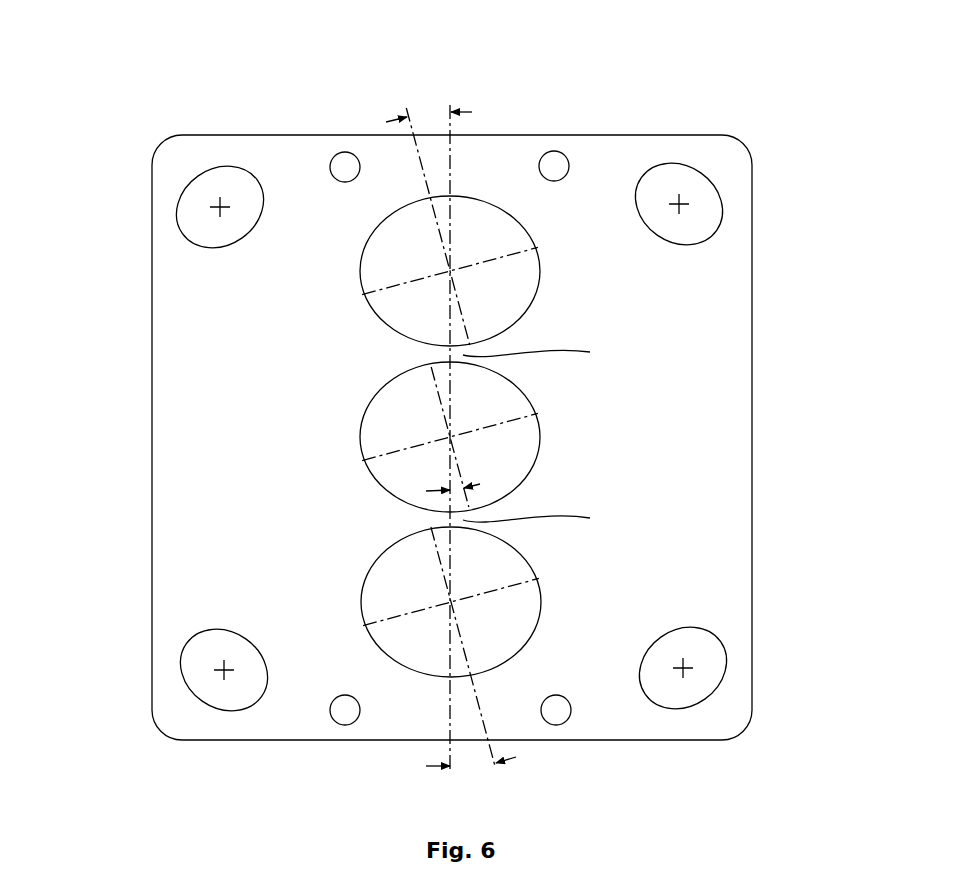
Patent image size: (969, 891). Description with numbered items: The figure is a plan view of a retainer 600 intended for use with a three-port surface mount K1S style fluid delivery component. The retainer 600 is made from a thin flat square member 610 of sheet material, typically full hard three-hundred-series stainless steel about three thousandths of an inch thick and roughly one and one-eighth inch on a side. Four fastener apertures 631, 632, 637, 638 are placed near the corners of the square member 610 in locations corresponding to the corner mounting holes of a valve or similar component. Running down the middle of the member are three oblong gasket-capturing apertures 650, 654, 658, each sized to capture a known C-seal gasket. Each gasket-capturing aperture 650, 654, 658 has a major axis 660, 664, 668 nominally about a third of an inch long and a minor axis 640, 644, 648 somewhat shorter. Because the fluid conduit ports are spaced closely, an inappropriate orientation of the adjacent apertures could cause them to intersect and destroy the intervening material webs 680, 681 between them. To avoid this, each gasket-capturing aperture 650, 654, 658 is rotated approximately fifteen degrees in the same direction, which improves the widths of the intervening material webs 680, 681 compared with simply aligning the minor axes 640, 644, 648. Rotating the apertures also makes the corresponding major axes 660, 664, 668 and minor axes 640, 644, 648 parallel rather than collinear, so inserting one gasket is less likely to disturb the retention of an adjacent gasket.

The retainer 600 is at (313, 128).
The thin flat square member 610 is at (709, 522).
The fastener aperture 631 is at (700, 175).
The fastener aperture 632 is at (185, 188).
The fastener aperture 637 is at (195, 693).
The fastener aperture 638 is at (705, 698).
The minor axis 640 is at (440, 232).
The minor axis 644 is at (437, 392).
The minor axis 648 is at (440, 556).
The gasket-capturing aperture 650 is at (539, 262).
The gasket-capturing aperture 654 is at (541, 423).
The gasket-capturing aperture 658 is at (542, 590).
The major axis 660 is at (407, 285).
The major axis 664 is at (408, 450).
The major axis 668 is at (410, 613).
The intervening material web 680 is at (543, 352).
The intervening material web 681 is at (547, 519).